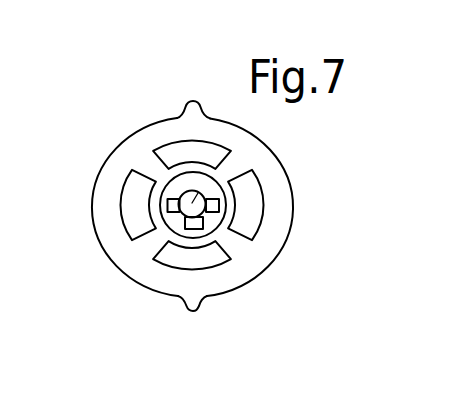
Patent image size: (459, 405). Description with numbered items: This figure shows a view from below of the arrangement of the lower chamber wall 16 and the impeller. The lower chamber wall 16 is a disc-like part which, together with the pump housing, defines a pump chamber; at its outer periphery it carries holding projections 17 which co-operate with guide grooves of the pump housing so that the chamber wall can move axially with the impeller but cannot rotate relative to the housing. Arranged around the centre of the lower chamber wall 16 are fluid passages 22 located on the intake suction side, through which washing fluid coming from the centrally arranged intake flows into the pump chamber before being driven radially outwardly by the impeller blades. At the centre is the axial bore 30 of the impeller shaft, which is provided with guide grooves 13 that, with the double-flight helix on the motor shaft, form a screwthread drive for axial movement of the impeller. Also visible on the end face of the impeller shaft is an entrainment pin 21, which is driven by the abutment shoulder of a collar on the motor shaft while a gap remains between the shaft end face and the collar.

The guide grooves 13 is at (172, 207).
The lower chamber wall 16 is at (235, 279).
The holding projections 17 is at (189, 103).
The entrainment pin 21 is at (197, 227).
The fluid passages 22 is at (242, 210).
The axial bore 30 is at (192, 203).